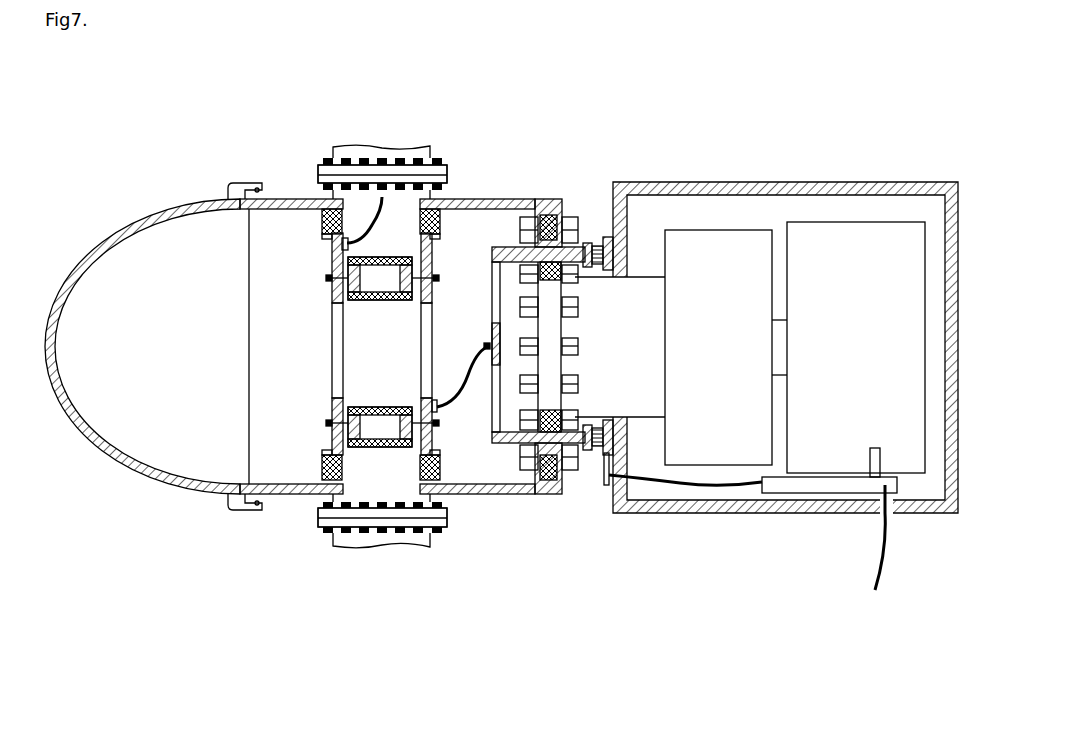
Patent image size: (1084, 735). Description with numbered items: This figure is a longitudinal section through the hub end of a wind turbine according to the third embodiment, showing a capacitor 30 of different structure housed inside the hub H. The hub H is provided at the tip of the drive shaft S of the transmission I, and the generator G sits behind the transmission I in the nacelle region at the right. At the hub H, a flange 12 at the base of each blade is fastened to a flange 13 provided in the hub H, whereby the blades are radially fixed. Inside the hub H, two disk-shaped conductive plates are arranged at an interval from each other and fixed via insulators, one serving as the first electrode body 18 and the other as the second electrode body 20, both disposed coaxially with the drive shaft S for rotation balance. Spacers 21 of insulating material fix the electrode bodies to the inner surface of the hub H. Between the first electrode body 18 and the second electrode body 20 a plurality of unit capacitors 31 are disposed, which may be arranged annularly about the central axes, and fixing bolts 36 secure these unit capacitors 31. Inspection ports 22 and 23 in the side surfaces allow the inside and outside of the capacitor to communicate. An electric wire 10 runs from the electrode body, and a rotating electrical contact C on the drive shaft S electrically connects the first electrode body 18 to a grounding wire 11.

The electric wire 10 is at (352, 230).
The grounding wire 11 is at (873, 558).
The flange 12 is at (318, 162).
The flange 13 is at (318, 185).
The first electrode body 18 is at (433, 257).
The second electrode body 20 is at (327, 257).
The spacer 21 is at (318, 478).
The inspection port 22 is at (332, 322).
The inspection port 23 is at (420, 355).
The capacitor 30 is at (306, 417).
The unit capacitor 31 is at (387, 257).
The fixing bolt 36 is at (327, 278).
The drive shaft S is at (655, 295).
The transmission I is at (742, 258).
The generator G is at (883, 258).
The hub H is at (528, 490).
The rotating electrical contact C is at (597, 470).